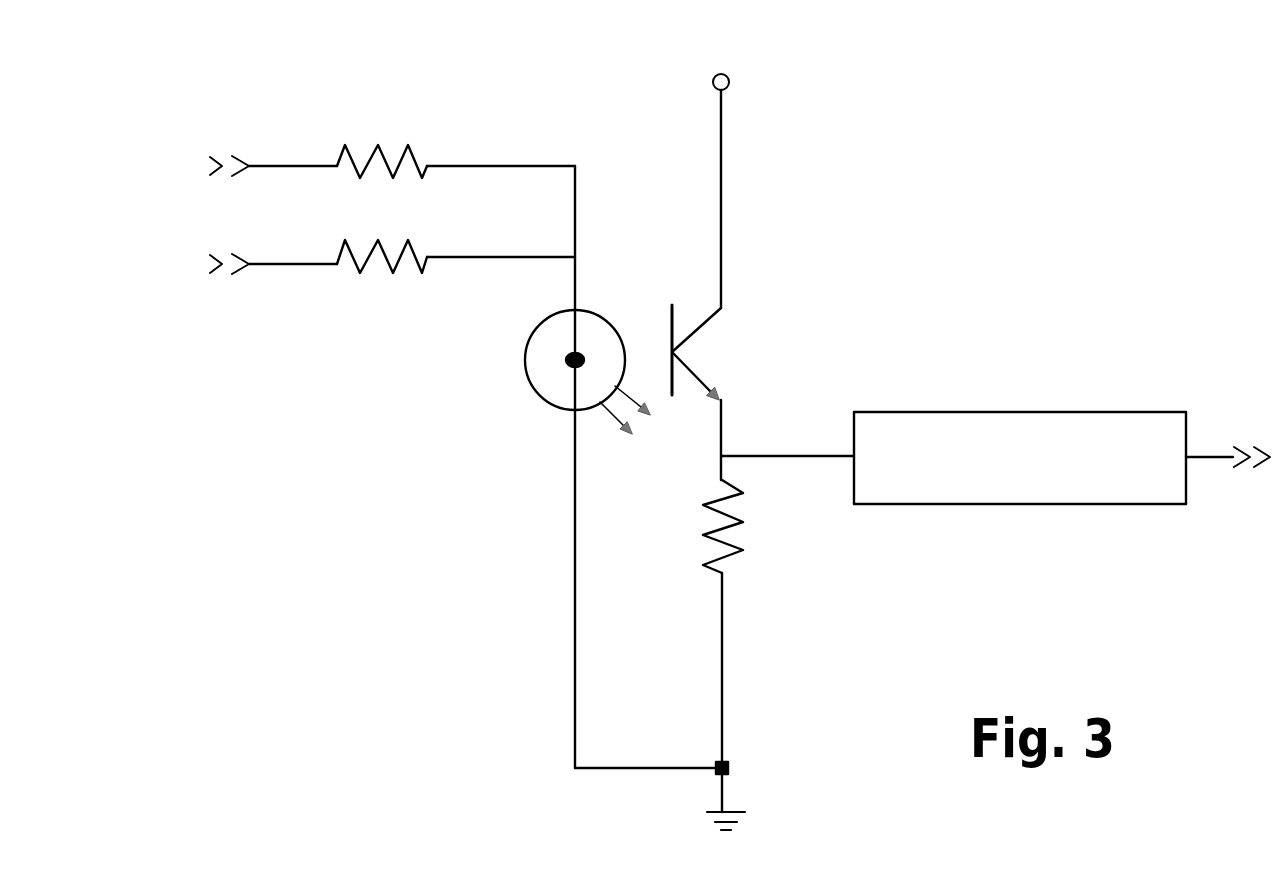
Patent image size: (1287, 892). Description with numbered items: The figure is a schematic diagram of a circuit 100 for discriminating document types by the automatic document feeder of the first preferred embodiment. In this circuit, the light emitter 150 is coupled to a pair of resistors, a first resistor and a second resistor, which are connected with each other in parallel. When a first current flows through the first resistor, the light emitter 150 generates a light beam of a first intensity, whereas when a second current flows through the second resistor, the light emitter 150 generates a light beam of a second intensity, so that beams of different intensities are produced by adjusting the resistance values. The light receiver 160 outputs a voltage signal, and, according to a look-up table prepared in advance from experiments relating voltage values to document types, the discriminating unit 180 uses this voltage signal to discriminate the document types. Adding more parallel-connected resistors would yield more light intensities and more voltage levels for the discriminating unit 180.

The optical coupling circuit 100 is at (1050, 73).
The light emitter 150 is at (537, 368).
The light receiver 160 is at (702, 350).
The discriminating unit 180 is at (972, 425).